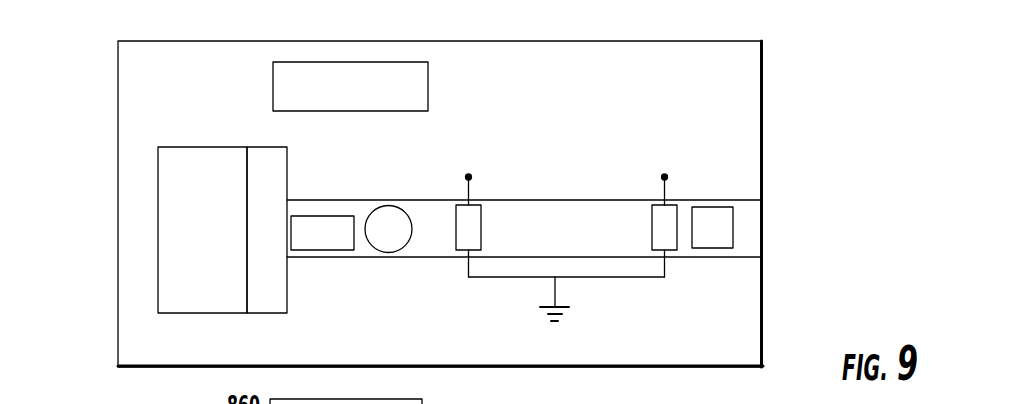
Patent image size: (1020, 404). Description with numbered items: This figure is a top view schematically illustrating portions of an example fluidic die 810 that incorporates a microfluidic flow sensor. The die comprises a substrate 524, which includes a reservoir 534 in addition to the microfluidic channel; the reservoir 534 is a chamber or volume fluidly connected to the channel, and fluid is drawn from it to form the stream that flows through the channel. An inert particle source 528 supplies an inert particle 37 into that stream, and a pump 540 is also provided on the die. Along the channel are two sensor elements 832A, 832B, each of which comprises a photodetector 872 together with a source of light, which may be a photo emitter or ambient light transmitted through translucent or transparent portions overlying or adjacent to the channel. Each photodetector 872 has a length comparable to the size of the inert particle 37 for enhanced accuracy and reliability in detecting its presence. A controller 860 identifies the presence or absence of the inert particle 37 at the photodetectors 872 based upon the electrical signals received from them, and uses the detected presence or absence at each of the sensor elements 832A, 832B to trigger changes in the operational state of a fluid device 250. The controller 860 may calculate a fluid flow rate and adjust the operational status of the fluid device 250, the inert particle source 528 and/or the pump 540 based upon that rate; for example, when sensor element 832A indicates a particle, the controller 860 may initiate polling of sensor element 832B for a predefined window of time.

The fluidic die 810 is at (60, 110).
The inert particle source 528 is at (158, 247).
The reservoir 534 is at (263, 147).
The controller 860 is at (367, 62).
The substrate 524 is at (763, 155).
The pump 540 is at (323, 216).
The inert particle 37 is at (400, 250).
The sensor element 832A is at (486, 164).
The sensor element 832B is at (671, 164).
The photodetector 872 is at (477, 233).
The fluid device 250 is at (717, 248).